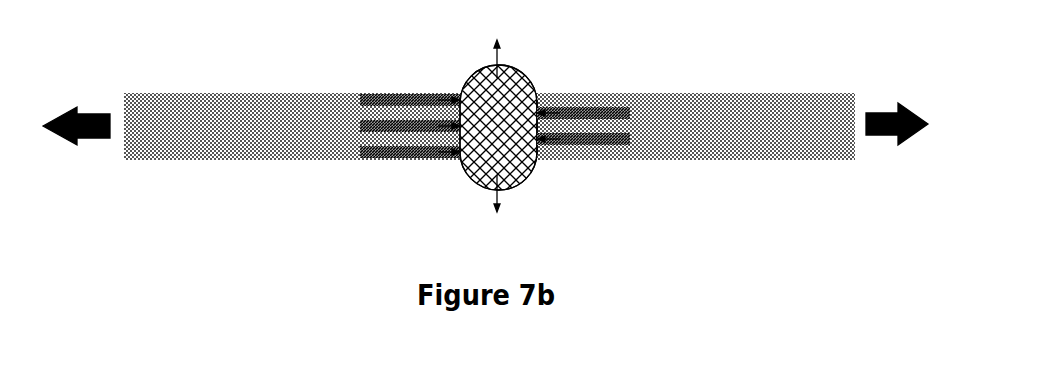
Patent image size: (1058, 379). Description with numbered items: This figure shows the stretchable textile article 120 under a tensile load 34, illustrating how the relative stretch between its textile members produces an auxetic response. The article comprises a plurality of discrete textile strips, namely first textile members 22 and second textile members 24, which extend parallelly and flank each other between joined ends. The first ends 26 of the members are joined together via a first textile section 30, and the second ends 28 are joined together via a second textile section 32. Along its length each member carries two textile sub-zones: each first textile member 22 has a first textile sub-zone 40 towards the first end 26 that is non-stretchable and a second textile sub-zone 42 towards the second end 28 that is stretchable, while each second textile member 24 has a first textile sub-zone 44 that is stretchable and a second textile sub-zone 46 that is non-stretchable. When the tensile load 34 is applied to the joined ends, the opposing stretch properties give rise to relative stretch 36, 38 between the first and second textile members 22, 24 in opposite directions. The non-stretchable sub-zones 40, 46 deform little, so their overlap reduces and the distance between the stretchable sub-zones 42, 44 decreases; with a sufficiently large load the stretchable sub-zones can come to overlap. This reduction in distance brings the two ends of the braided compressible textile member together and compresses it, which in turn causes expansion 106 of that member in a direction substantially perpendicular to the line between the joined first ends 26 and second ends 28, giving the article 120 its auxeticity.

The stretchable textile article 120 is at (285, 63).
The second textile section 32 is at (212, 138).
The first textile section 30 is at (743, 137).
The tensile load 34 is at (485, 108).
The first textile member 22 is at (354, 100).
The second end 28 is at (362, 86).
The first textile sub-zone of second textile member 44 is at (400, 108).
The second textile sub-zone of first textile member 42 is at (430, 120).
The relative stretch 36 is at (452, 90).
The relative stretch 38 is at (542, 93).
The expansion 106 is at (497, 127).
The second textile member 24 is at (636, 113).
The first end 26 is at (628, 84).
The second textile sub-zone of second textile member 46 is at (566, 108).
The first textile sub-zone of first textile member 40 is at (604, 124).